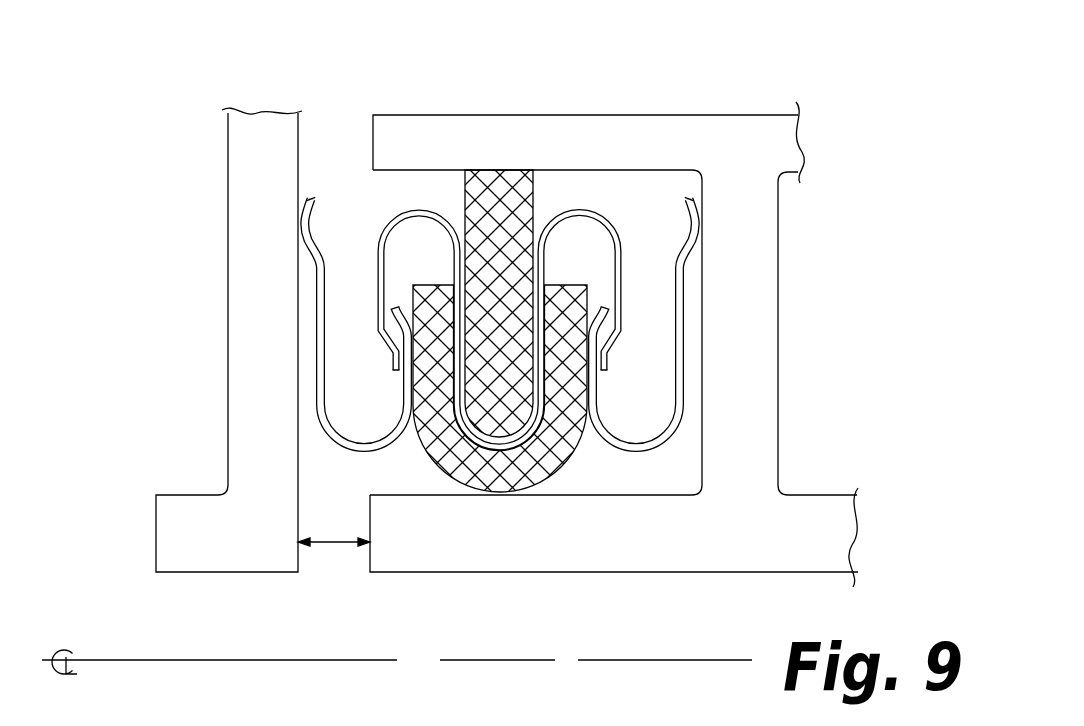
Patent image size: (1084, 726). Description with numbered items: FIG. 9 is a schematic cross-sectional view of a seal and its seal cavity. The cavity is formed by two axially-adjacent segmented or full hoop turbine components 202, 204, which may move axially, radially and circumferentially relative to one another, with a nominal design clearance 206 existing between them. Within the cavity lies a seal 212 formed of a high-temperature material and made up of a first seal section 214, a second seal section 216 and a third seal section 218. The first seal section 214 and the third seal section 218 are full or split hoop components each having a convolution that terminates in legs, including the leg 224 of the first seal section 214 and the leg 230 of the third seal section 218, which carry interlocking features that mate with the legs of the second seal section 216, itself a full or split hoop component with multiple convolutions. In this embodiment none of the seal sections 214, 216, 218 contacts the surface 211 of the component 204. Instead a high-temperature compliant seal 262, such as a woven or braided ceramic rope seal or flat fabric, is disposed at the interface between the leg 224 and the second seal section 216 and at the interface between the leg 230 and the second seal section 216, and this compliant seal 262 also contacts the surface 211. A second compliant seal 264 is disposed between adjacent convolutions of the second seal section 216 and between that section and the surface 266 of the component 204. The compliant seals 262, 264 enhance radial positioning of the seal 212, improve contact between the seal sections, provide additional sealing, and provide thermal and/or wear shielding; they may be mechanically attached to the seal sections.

The turbine component 202 is at (237, 570).
The turbine component 204 is at (723, 573).
The nominal design clearance 206 is at (333, 543).
The surface 211 is at (632, 497).
The seal 212 is at (323, 100).
The first seal section 214 is at (304, 296).
The second seal section 216 is at (583, 196).
The third seal section 218 is at (696, 289).
The leg 224 is at (402, 400).
The leg 230 is at (597, 390).
The compliant seal 262 is at (430, 458).
The second compliant seal 264 is at (533, 186).
The surface 266 is at (411, 168).